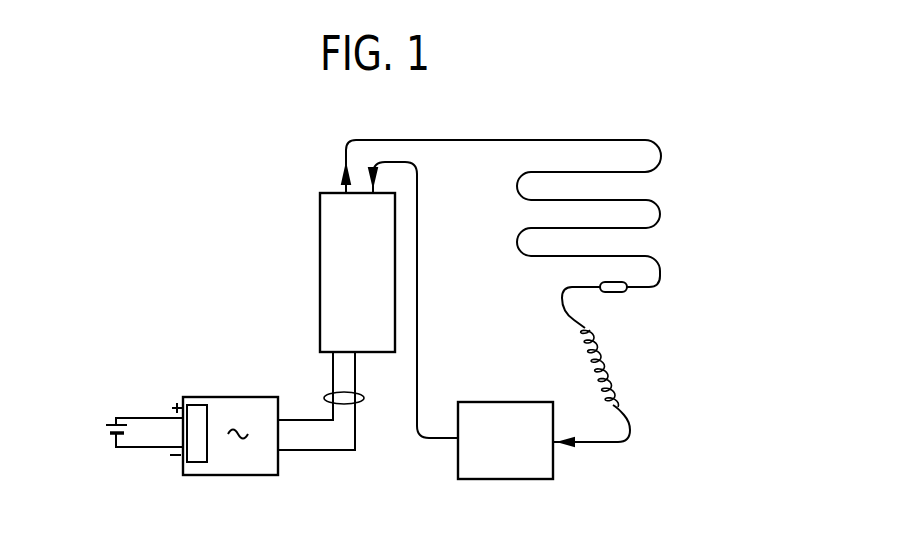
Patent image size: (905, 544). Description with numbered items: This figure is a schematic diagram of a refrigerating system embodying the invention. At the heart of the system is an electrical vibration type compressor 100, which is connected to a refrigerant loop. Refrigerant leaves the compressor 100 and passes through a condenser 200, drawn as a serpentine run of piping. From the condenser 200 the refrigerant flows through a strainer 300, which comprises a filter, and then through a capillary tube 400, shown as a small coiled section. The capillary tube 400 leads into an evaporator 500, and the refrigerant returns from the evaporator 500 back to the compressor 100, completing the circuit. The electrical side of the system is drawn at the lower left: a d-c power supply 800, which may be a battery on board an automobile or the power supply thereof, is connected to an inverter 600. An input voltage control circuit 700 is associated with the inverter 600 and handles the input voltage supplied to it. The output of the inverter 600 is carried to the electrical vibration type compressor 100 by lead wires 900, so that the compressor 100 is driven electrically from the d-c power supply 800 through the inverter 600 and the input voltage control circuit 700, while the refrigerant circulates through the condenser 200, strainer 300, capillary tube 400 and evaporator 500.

The electrical vibration type compressor 100 is at (320, 253).
The condenser 200 is at (655, 187).
The strainer 300 is at (614, 293).
The capillary tube 400 is at (606, 385).
The evaporator 500 is at (505, 402).
The inverter 600 is at (254, 397).
The input voltage control circuit 700 is at (196, 410).
The d-c power supply 800 is at (142, 423).
The lead wires 900 is at (358, 404).